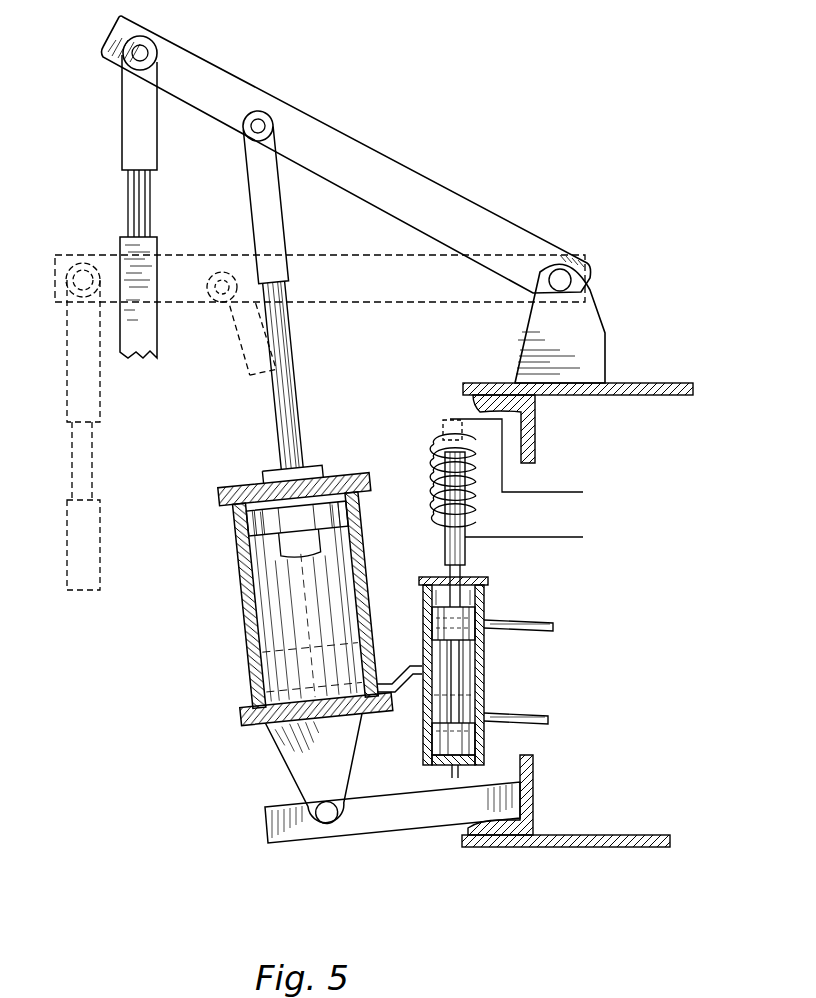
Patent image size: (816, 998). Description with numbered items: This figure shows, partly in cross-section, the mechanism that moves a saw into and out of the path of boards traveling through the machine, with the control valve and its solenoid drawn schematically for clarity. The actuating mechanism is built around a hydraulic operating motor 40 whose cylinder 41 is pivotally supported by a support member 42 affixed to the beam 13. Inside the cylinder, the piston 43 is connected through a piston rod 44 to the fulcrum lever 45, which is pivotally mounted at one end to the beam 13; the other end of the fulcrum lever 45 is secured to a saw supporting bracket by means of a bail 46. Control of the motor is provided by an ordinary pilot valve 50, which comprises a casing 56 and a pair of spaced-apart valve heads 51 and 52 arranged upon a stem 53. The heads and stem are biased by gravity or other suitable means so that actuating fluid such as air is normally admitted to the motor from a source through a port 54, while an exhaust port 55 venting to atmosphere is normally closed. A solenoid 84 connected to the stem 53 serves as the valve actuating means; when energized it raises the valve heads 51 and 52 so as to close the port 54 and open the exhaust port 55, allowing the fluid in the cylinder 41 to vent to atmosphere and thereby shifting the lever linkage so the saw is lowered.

The beam 13 is at (680, 384).
The hydraulic operating motor 40 is at (248, 621).
The cylinder 41 is at (255, 697).
The support member 42 is at (440, 815).
The piston 43 is at (250, 535).
The piston rod 44 is at (226, 380).
The fulcrum lever 45 is at (396, 172).
The bail 46 is at (120, 243).
The pilot valve 50 is at (423, 668).
The valve head 51 is at (419, 588).
The valve head 52 is at (478, 731).
The stem 53 is at (447, 421).
The port 54 is at (533, 717).
The exhaust port 55 is at (532, 624).
The casing 56 is at (470, 668).
The solenoid 84 is at (472, 500).